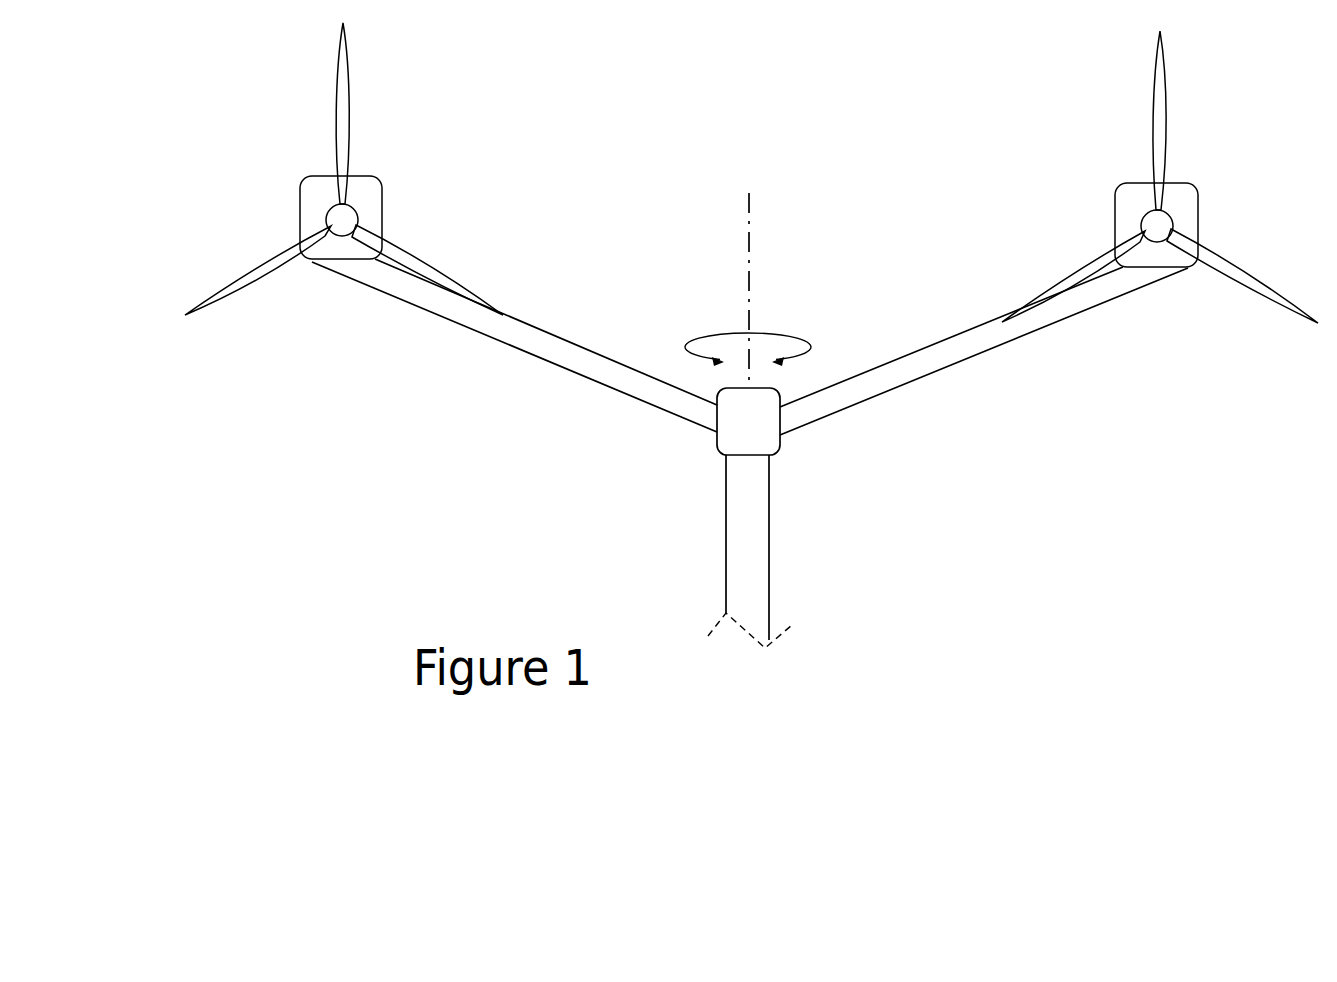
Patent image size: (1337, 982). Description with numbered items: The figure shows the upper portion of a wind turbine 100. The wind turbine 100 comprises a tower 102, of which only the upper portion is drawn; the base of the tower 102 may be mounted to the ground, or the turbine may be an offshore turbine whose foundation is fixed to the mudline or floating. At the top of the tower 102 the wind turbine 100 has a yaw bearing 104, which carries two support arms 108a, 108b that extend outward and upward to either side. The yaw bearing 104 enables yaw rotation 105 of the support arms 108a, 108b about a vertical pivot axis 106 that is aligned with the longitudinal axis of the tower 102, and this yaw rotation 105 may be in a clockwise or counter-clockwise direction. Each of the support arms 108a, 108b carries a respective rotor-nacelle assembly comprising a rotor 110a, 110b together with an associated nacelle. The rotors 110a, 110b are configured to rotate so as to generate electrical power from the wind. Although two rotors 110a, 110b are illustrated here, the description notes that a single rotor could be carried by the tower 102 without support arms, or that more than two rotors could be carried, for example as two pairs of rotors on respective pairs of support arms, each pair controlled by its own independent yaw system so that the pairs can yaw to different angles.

The wind turbine 100 is at (625, 227).
The tower 102 is at (752, 572).
The yaw bearing 104 is at (753, 435).
The yaw rotation 105 is at (800, 335).
The vertical pivot axis 106 is at (753, 263).
The support arm 108a is at (563, 357).
The support arm 108b is at (915, 363).
The rotor 110a is at (247, 281).
The rotor 110b is at (1233, 285).